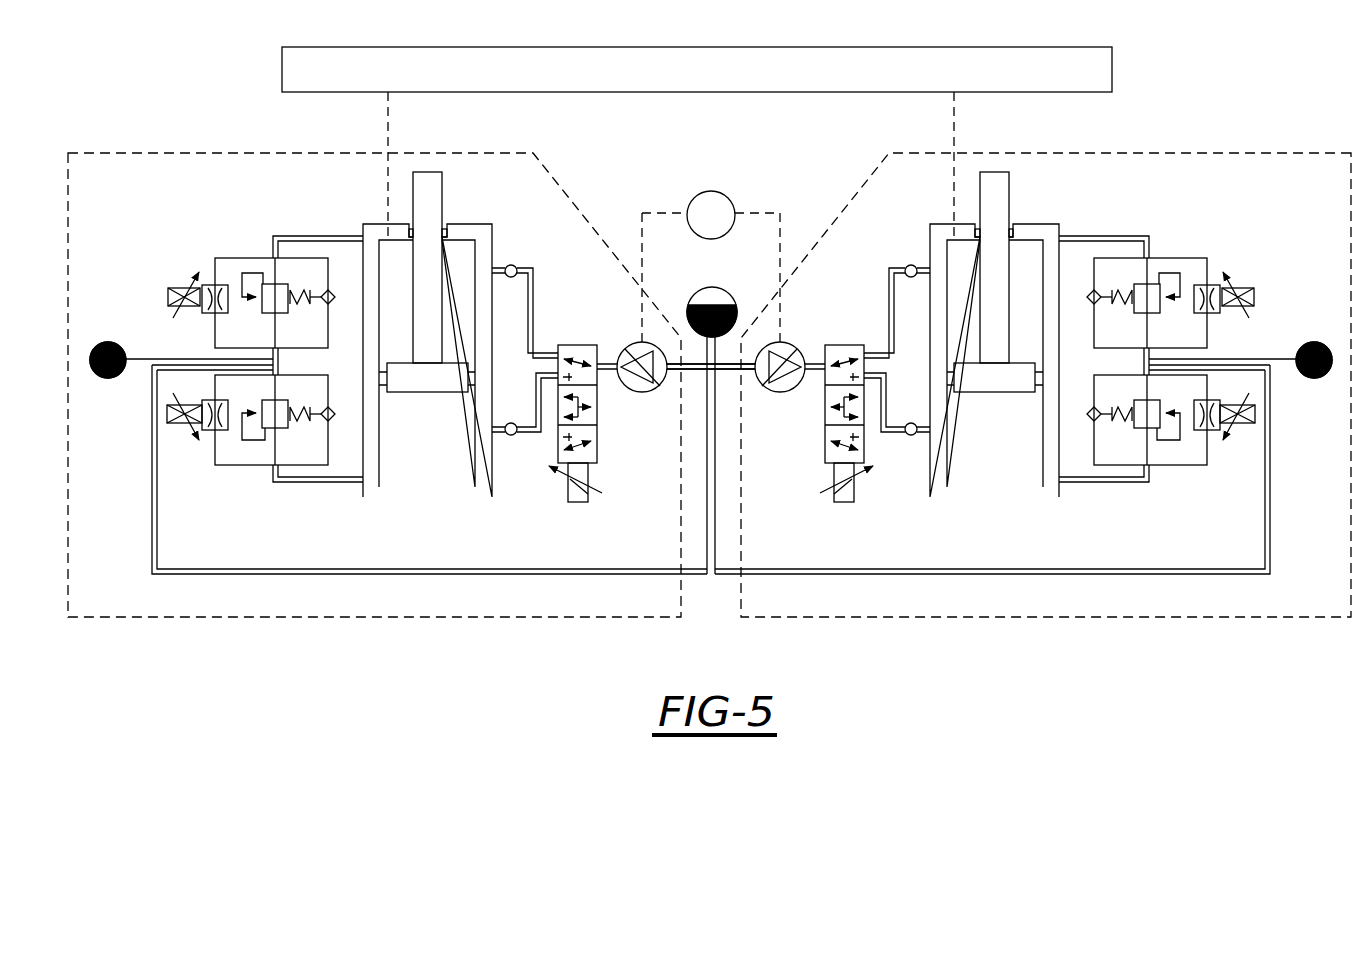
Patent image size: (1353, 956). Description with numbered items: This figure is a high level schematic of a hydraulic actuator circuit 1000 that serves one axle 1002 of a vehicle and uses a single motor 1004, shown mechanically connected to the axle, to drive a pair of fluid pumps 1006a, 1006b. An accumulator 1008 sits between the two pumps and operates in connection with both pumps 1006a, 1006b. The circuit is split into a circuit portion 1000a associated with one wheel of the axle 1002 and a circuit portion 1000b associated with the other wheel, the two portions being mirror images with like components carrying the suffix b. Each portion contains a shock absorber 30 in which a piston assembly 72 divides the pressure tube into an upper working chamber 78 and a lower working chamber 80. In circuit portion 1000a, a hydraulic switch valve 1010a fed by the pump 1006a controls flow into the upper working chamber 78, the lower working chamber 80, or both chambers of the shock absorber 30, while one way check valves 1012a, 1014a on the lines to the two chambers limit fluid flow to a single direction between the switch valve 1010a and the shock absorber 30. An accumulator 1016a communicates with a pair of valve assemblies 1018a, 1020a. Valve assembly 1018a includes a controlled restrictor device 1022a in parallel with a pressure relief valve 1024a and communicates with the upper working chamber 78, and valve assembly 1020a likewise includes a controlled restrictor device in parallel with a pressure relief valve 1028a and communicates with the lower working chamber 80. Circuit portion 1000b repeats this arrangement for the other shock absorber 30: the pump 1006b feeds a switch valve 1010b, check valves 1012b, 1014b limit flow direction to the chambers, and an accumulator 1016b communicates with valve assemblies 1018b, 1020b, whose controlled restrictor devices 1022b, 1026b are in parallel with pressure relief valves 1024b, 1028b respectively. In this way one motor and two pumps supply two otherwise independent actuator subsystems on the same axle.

The hydraulic actuator circuit 1000 is at (1169, 124).
The circuit portion 1000a is at (120, 153).
The circuit portion 1000b is at (1296, 153).
The axle 1002 is at (443, 55).
The motor 1004 is at (733, 203).
The accumulator 1008 is at (728, 290).
The shock absorber 30 is at (730, 334).
The piston assembly 72 is at (407, 388).
The upper working chamber 78 is at (468, 306).
The lower working chamber 80 is at (431, 470).
The fluid pump 1006a is at (635, 358).
The fluid pump 1006b is at (787, 358).
The hydraulic switch valve 1010a is at (597, 422).
The hydraulic switch valve 1010b is at (825, 422).
The one way check valve 1012a is at (516, 266).
The one way check valve 1012b is at (908, 266).
The one way check valve 1014a is at (510, 437).
The one way check valve 1014b is at (912, 437).
The accumulator 1016a is at (136, 359).
The accumulator 1016b is at (1286, 359).
The valve assembly 1018a is at (228, 274).
The valve assembly 1018b is at (1193, 274).
The valve assembly 1020a is at (429, 469).
The valve assembly 1020b is at (992, 469).
The controlled restrictor device 1022a is at (193, 285).
The controlled restrictor device 1022b is at (1225, 285).
The pressure relief valve 1024a is at (289, 278).
The pressure relief valve 1024b is at (1157, 273).
The controlled restrictor device 1026b is at (198, 444).
The pressure relief valve 1028a is at (285, 432).
The pressure relief valve 1028b is at (1137, 432).